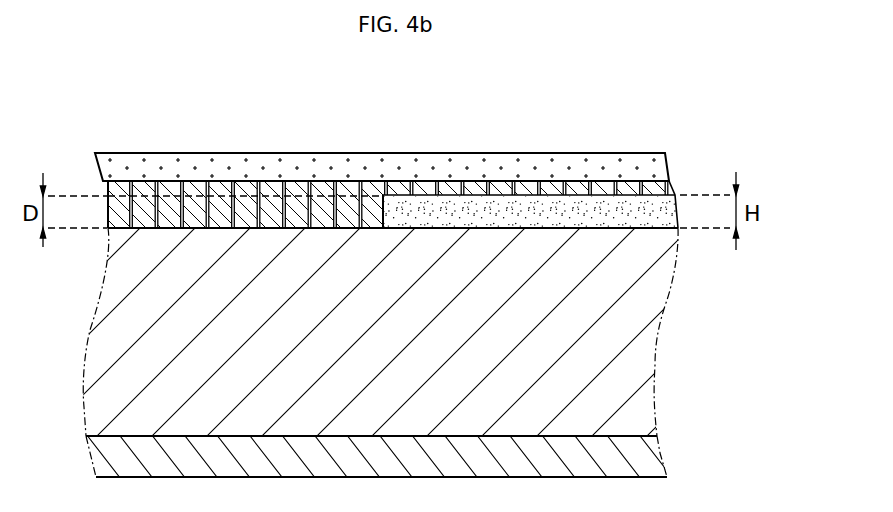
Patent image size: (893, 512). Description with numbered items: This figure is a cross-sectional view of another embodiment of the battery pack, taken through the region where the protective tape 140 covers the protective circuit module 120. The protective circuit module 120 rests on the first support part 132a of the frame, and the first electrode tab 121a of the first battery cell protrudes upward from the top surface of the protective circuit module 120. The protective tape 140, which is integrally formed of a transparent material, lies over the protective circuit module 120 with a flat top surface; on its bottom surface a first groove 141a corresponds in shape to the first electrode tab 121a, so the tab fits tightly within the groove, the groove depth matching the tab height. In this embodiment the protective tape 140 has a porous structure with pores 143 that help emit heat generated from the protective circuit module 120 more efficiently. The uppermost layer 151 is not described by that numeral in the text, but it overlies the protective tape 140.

The encapsulation layer 151 is at (149, 162).
The protective tape 140 is at (218, 180).
The pores 143 is at (284, 180).
The first groove 141a is at (383, 213).
The first electrode tab 121a is at (505, 208).
The protective circuit module 120 is at (640, 348).
The first support part 132a is at (640, 455).